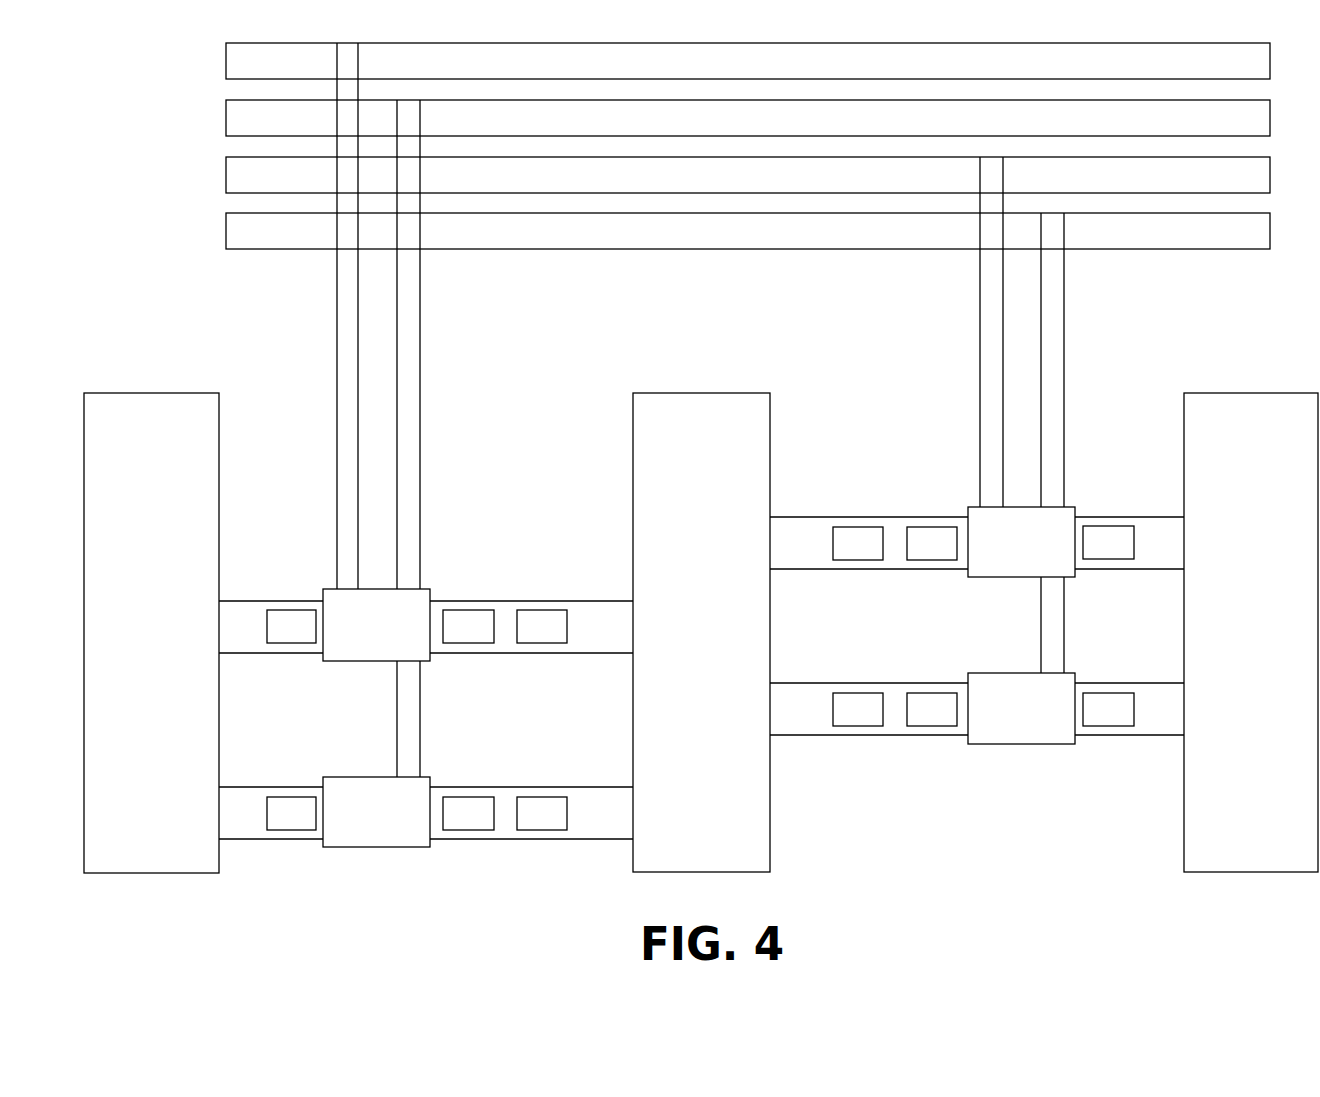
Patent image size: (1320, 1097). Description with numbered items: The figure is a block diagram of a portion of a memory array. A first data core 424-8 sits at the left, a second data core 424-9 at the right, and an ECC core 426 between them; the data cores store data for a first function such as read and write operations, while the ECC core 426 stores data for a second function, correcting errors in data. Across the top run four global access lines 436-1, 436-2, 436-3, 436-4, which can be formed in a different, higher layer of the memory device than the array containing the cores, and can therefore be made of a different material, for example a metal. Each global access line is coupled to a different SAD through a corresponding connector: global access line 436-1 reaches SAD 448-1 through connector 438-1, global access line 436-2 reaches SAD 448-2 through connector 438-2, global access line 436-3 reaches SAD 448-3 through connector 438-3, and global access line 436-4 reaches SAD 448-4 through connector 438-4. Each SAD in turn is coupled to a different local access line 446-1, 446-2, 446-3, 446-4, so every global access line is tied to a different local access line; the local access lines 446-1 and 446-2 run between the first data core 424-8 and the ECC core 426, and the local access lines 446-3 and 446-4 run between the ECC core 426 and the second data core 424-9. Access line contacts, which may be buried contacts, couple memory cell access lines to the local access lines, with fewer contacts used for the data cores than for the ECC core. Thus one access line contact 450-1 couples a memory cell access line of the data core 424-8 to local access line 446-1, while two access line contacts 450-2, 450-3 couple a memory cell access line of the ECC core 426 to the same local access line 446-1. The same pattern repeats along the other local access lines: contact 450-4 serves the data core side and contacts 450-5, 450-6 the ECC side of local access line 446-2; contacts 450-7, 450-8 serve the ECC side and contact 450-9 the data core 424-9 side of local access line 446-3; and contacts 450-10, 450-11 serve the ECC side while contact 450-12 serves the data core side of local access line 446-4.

The first data core 424-8 is at (154, 390).
The second data core 424-9 is at (1255, 390).
The ECC core 426 is at (704, 390).
The global access line 436-1 is at (226, 58).
The global access line 436-2 is at (226, 116).
The global access line 436-3 is at (226, 172).
The global access line 436-4 is at (226, 229).
The connector 438-1 is at (337, 291).
The connector 438-2 is at (420, 382).
The connector 438-3 is at (979, 286).
The connector 438-4 is at (1064, 381).
The local access line 446-1 is at (246, 598).
The local access line 446-2 is at (251, 785).
The local access line 446-3 is at (797, 515).
The local access line 446-4 is at (801, 680).
The SAD 448-1 is at (378, 590).
The SAD 448-2 is at (357, 776).
The SAD 448-3 is at (1023, 505).
The SAD 448-4 is at (1002, 672).
The access line contact 450-1 is at (298, 610).
The access line contact 450-2 is at (471, 610).
The access line contact 450-3 is at (545, 610).
The access line contact 450-4 is at (294, 831).
The access line contact 450-5 is at (471, 831).
The access line contact 450-6 is at (546, 831).
The access line contact 450-7 is at (858, 527).
The access line contact 450-8 is at (935, 527).
The access line contact 450-9 is at (1108, 526).
The access line contact 450-10 is at (860, 728).
The access line contact 450-11 is at (934, 728).
The access line contact 450-12 is at (1110, 728).